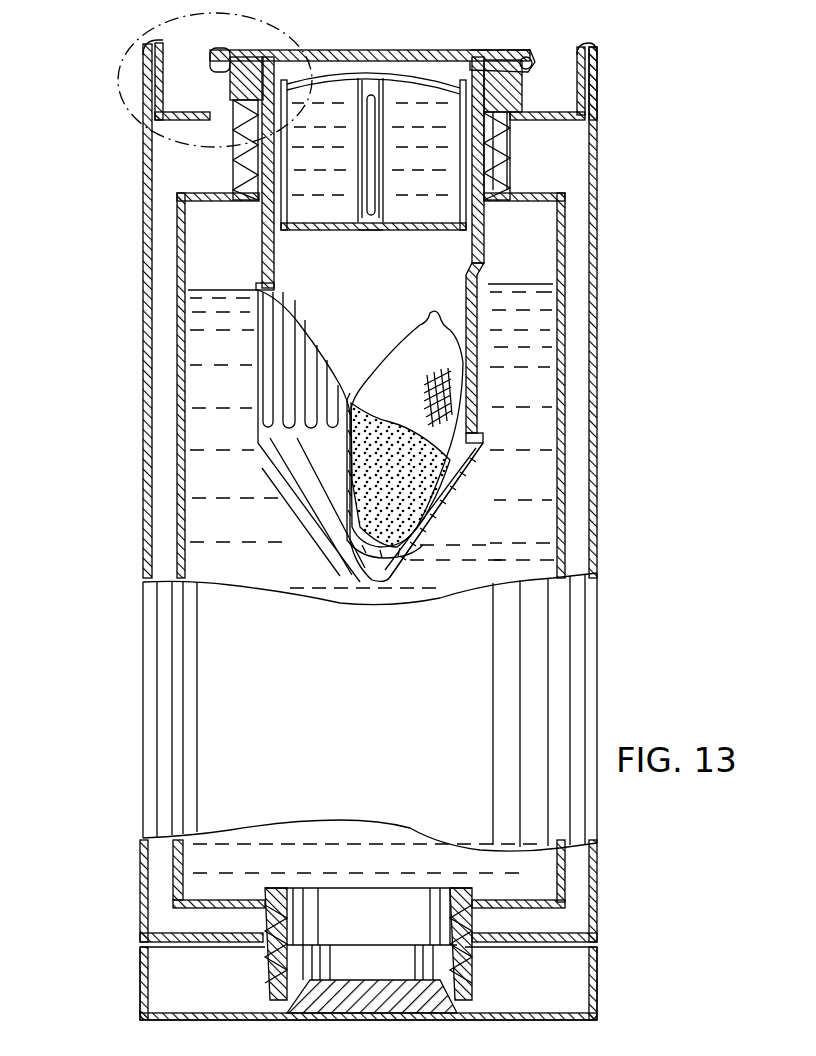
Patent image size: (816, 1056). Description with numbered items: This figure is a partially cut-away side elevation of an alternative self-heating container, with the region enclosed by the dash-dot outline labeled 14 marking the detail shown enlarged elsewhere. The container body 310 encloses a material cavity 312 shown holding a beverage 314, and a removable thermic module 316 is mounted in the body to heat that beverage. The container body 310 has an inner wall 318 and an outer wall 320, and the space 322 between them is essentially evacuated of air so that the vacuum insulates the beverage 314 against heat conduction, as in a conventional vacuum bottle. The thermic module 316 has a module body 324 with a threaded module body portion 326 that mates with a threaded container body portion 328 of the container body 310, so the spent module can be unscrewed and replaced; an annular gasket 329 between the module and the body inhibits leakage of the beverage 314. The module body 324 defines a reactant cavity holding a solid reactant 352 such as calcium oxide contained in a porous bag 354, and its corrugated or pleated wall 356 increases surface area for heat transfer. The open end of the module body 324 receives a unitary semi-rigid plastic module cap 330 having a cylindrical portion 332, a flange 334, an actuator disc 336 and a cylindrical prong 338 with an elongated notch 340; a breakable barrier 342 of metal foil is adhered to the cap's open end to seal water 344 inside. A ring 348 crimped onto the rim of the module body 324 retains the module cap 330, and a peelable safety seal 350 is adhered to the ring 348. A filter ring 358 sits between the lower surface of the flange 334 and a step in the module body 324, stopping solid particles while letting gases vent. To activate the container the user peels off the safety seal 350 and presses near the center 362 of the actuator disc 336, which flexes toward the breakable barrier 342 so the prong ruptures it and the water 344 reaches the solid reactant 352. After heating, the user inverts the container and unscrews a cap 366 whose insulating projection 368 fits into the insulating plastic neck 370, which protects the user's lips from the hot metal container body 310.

The detail area of FIG. 14 is at (118, 88).
The container body 310 is at (597, 640).
The material cavity 312 is at (265, 532).
The beverage 314 is at (537, 560).
The thermic module 316 is at (561, 492).
The inner wall 318 is at (557, 362).
The outer wall 320 is at (596, 355).
The space 322 is at (580, 312).
The module body 324 is at (485, 252).
The threaded module body portion 326 is at (490, 152).
The threaded container body portion 328 is at (505, 175).
The annular gasket 329 is at (523, 108).
The module cap 330 is at (470, 58).
The cylindrical portion 332 is at (273, 205).
The flange 334 is at (248, 77).
The actuator disc 336 is at (392, 73).
The cylindrical prong 338 is at (387, 187).
The elongated notch 340 is at (370, 193).
The breakable barrier 342 is at (370, 232).
The water 344 is at (452, 197).
The ring 348 is at (528, 60).
The safety seal 350 is at (332, 55).
The solid reactant 352 is at (427, 477).
The bag 354 is at (390, 360).
The corrugated or pleated wall 356 is at (290, 380).
The filter ring 358 is at (253, 52).
The center 362 is at (381, 72).
The cap 366 is at (597, 965).
The projection 368 is at (370, 1000).
The neck 370 is at (463, 963).